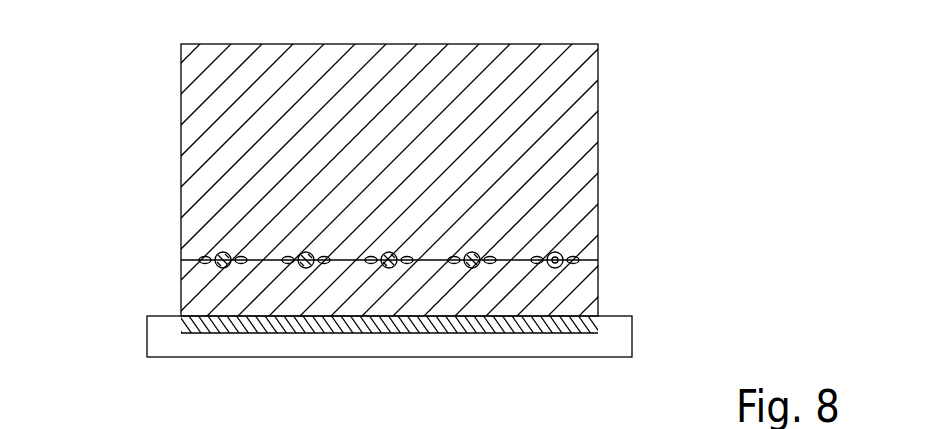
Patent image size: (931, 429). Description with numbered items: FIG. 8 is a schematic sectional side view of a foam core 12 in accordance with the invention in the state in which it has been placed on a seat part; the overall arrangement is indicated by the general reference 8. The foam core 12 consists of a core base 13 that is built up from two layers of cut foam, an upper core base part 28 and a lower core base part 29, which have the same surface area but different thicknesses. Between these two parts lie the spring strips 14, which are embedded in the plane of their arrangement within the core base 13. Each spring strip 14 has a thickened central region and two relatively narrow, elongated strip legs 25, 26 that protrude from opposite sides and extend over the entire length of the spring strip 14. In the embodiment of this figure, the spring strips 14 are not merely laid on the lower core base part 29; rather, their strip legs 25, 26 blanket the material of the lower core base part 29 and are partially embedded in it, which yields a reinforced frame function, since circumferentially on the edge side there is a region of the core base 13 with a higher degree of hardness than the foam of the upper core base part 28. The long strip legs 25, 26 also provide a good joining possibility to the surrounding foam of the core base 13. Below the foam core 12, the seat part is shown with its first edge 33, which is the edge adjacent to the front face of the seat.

The assembly 8 is at (122, 110).
The foam core 12 is at (612, 155).
The core base 13 is at (578, 198).
The spring strip 14 is at (222, 252).
The strip leg 25 is at (207, 257).
The strip leg 26 is at (578, 260).
The upper core base part 28 is at (583, 101).
The lower core base part 29 is at (585, 290).
The first edge 33 is at (617, 337).